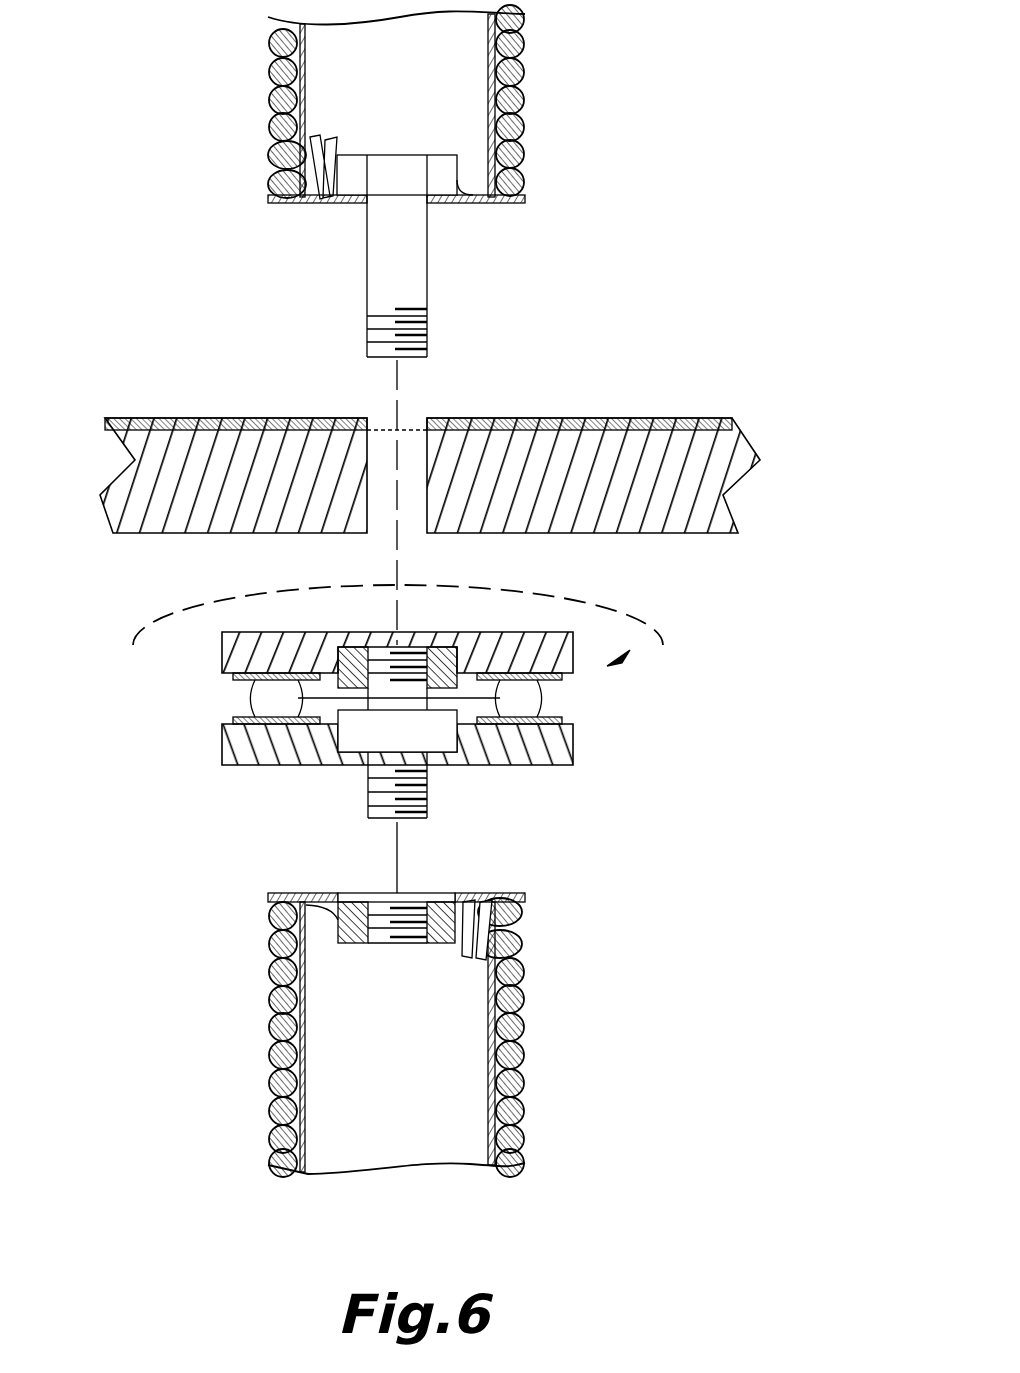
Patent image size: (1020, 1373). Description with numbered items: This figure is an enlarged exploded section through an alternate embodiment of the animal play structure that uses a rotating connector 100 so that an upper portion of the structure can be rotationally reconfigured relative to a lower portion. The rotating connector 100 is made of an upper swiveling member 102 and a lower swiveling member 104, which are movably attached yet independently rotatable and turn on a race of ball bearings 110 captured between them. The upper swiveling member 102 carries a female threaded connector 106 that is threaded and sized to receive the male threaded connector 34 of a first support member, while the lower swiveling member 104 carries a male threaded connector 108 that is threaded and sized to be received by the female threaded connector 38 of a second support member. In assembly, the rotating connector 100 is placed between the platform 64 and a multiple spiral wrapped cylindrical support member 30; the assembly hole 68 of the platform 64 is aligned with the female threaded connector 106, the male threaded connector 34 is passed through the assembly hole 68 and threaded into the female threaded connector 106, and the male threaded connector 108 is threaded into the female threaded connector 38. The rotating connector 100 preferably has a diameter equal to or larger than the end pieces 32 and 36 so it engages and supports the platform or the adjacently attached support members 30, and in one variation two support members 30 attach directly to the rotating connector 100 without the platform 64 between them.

The multiple spiral wrapped cylindrical support member 30 is at (566, 50).
The end piece 32 is at (525, 203).
The male threaded connector 34 is at (413, 250).
The end piece 36 is at (528, 898).
The female threaded connector 38 is at (385, 900).
The platform 64 is at (740, 432).
The assembly hole 68 is at (413, 430).
The rotating connector 100 is at (441, 705).
The upper swiveling member 102 is at (222, 662).
The lower swiveling member 104 is at (222, 740).
The female threaded connector 106 is at (410, 655).
The male threaded connector 108 is at (428, 790).
The race of ball bearings 110 is at (540, 702).